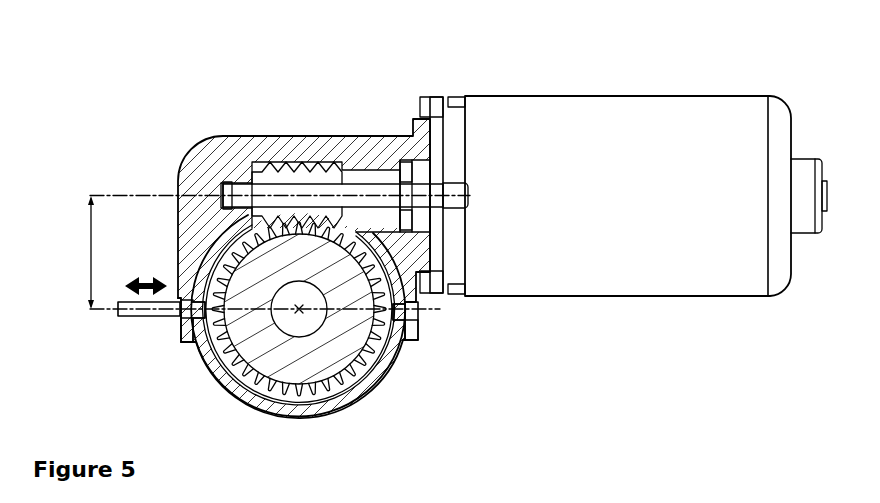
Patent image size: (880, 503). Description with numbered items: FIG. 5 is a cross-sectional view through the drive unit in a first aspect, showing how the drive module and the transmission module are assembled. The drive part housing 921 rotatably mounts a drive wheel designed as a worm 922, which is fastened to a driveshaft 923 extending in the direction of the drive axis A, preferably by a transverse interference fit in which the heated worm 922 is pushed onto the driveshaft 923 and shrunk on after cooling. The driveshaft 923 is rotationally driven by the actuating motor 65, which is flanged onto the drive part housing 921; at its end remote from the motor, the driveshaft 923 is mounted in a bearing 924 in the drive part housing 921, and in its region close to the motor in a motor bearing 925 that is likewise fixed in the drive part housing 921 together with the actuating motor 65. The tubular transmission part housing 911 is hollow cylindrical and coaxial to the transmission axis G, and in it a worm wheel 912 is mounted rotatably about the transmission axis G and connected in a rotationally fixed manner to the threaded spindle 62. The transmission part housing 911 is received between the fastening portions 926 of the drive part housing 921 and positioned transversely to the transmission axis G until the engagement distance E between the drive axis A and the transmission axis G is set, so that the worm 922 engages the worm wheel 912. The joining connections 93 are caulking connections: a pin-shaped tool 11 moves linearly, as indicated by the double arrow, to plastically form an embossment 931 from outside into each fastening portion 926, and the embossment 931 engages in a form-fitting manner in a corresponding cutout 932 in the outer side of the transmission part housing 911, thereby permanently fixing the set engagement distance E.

The pin-shaped tool 11 is at (130, 313).
The threaded spindle 62 is at (297, 307).
The actuating motor 65 is at (693, 132).
The joining connections 93 is at (167, 323).
The transmission part housing 911 is at (258, 400).
The worm wheel 912 is at (292, 358).
The drive part housing 921 is at (233, 157).
The worm 922 is at (293, 160).
The driveshaft 923 is at (368, 193).
The bearing 924 is at (200, 153).
The motor bearing 925 is at (405, 163).
The fastening portions 926 is at (183, 340).
The embossment 931 is at (193, 310).
The cutout 932 is at (200, 327).
The transmission axis G is at (301, 312).
The drive axis A is at (147, 193).
The engagement distance E is at (91, 258).